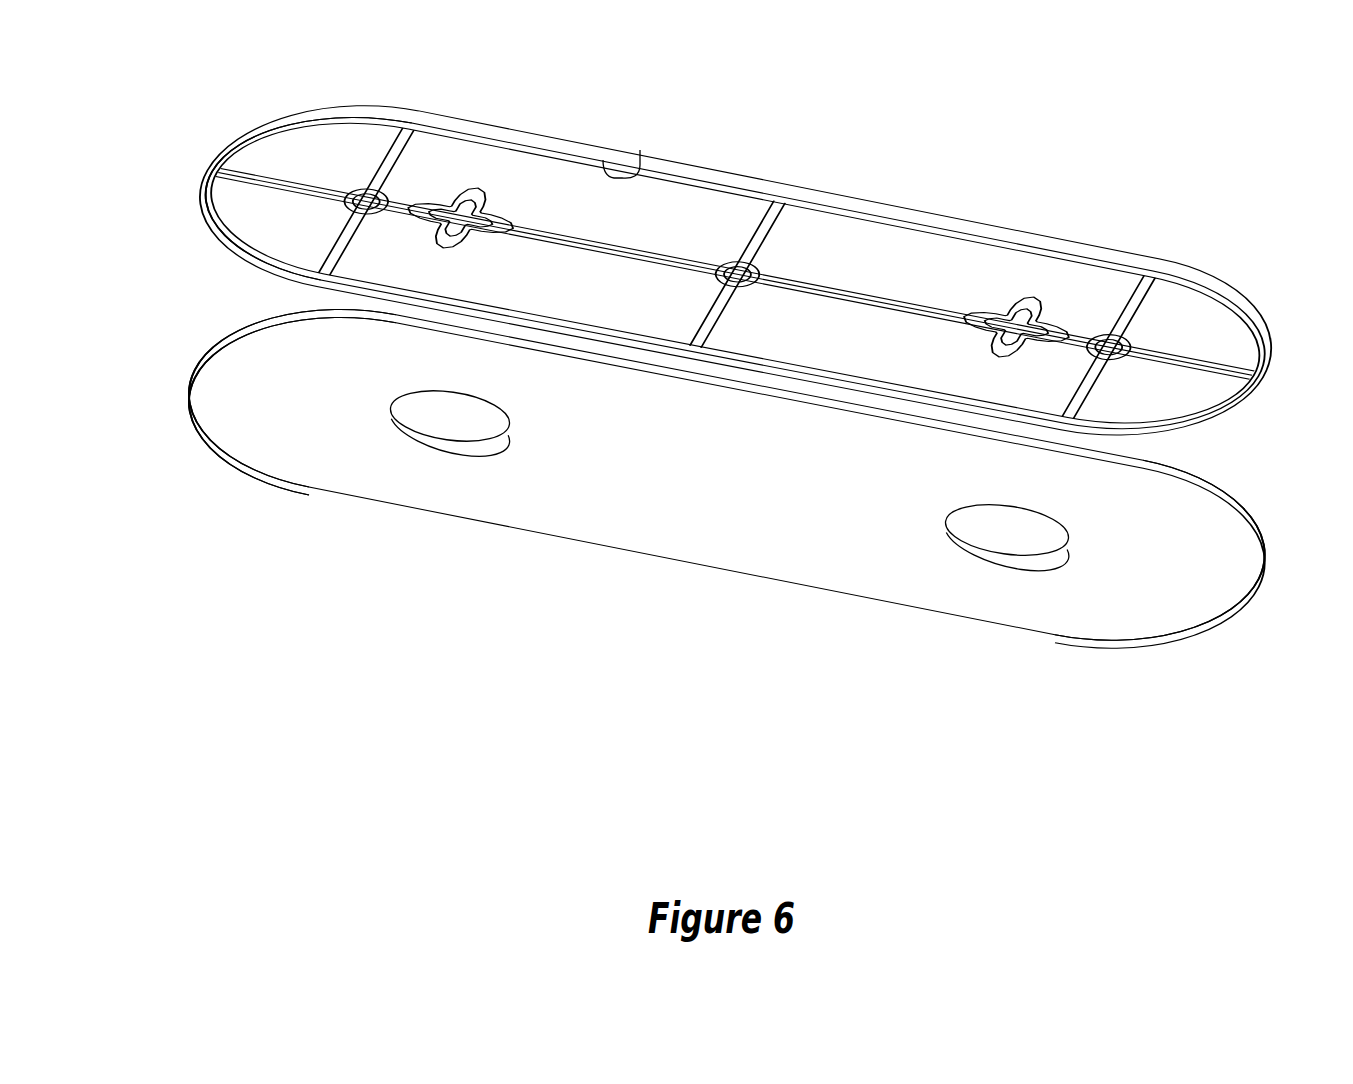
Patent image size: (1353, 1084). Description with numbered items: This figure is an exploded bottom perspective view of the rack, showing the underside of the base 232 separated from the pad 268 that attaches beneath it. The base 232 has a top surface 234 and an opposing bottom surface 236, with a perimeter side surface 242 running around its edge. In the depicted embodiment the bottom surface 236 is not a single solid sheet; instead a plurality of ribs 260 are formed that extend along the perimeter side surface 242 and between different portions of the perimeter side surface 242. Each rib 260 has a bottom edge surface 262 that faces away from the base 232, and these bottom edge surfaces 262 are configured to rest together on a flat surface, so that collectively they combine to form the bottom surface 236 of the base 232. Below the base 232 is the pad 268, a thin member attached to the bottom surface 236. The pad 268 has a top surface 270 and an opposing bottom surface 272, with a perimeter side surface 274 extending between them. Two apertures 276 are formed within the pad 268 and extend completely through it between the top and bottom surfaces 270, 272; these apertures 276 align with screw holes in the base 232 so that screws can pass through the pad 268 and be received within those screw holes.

The base 232 is at (1203, 320).
The top surface 234 is at (535, 135).
The bottom surface 236 is at (278, 147).
The perimeter side surface 242 is at (967, 222).
The ribs 260 is at (713, 180).
The bottom edge surface 262 is at (640, 152).
The pad 268 is at (680, 542).
The top surface 270 is at (242, 330).
The bottom surface 272 is at (230, 416).
The perimeter side surface 274 is at (1225, 494).
The apertures 276 is at (462, 428).